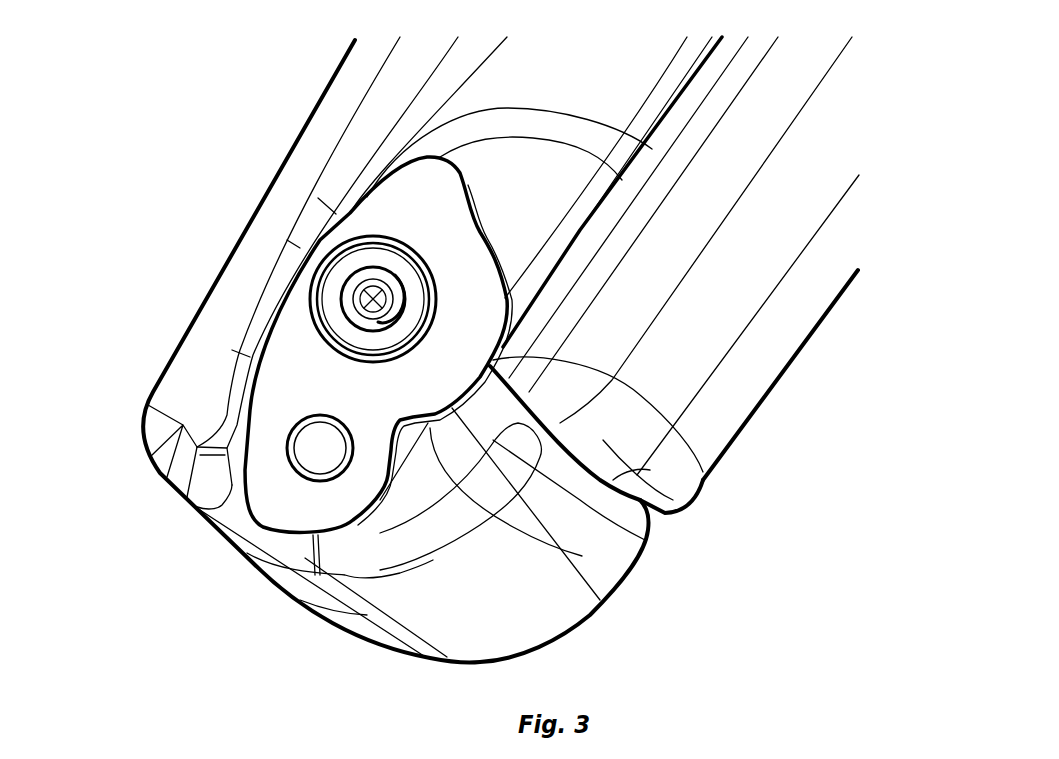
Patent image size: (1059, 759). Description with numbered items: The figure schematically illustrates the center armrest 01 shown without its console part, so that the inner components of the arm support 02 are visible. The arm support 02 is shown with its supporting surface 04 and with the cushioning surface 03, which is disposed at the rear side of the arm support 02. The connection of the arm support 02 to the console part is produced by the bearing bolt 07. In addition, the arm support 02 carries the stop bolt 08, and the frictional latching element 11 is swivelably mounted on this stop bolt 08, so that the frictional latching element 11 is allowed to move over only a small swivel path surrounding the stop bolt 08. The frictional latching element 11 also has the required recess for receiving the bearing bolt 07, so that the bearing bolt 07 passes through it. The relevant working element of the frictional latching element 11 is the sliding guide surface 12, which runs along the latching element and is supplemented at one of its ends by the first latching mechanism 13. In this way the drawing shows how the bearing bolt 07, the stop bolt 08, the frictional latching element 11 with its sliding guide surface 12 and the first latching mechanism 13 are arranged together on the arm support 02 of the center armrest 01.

The center armrest 01 is at (124, 76).
The arm support 02 is at (300, 165).
The cushioning surface 03 is at (318, 50).
The supporting surface 04 is at (710, 340).
The bearing bolt 07 is at (348, 288).
The stop bolt 08 is at (310, 455).
The frictional latching element 11 is at (317, 382).
The sliding guide surface 12 is at (703, 480).
The first latching mechanism 13 is at (620, 592).